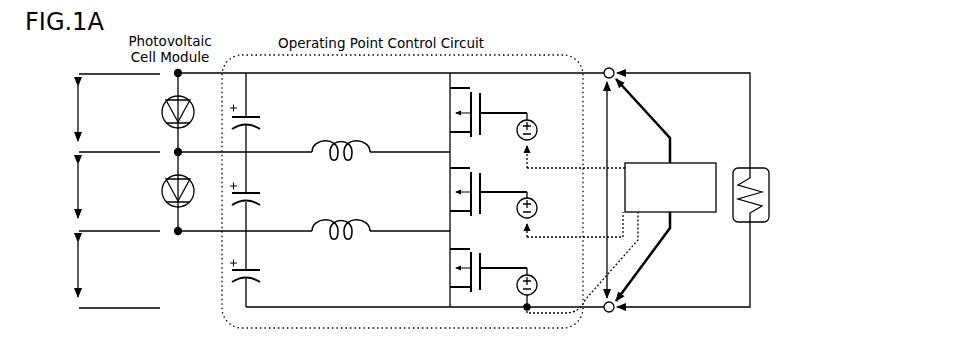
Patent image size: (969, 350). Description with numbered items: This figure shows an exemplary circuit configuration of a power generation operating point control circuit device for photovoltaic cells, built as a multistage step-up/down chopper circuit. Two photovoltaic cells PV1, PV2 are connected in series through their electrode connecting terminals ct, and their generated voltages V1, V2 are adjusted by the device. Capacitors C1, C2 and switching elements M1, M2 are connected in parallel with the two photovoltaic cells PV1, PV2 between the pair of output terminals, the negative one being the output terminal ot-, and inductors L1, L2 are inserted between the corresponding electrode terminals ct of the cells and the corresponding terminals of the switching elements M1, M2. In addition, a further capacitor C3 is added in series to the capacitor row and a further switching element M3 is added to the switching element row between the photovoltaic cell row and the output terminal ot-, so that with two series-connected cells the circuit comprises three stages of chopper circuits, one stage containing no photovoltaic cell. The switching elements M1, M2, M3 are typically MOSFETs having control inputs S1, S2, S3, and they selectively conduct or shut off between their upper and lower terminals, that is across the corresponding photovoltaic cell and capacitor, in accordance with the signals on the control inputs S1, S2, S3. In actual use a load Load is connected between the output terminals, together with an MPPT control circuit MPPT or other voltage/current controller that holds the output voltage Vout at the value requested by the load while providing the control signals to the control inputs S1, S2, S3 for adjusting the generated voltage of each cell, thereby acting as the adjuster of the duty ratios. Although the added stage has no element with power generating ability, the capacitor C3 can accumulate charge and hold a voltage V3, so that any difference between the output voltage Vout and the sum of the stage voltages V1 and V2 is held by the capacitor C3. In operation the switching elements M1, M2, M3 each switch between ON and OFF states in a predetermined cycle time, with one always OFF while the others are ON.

The photovoltaic cell PV1 is at (156, 112).
The photovoltaic cell PV2 is at (155, 191).
The electrode connecting terminal ct is at (183, 77).
The generated voltage V1 is at (60, 113).
The generated voltage V2 is at (59, 191).
The voltage of the added stage V3 is at (59, 269).
The capacitor C1 is at (252, 113).
The capacitor C2 is at (252, 190).
The capacitor C3 is at (252, 266).
The inductor L1 is at (341, 135).
The inductor L2 is at (341, 216).
The switching element M1 is at (471, 112).
The switching element M2 is at (471, 192).
The switching element M3 is at (471, 270).
The control input S1 is at (571, 140).
The control input S2 is at (570, 214).
The control input S3 is at (577, 262).
The output terminal ot- is at (605, 312).
The output voltage Vout is at (627, 190).
The MPPT control circuit MPPT is at (666, 190).
The load Load is at (702, 190).